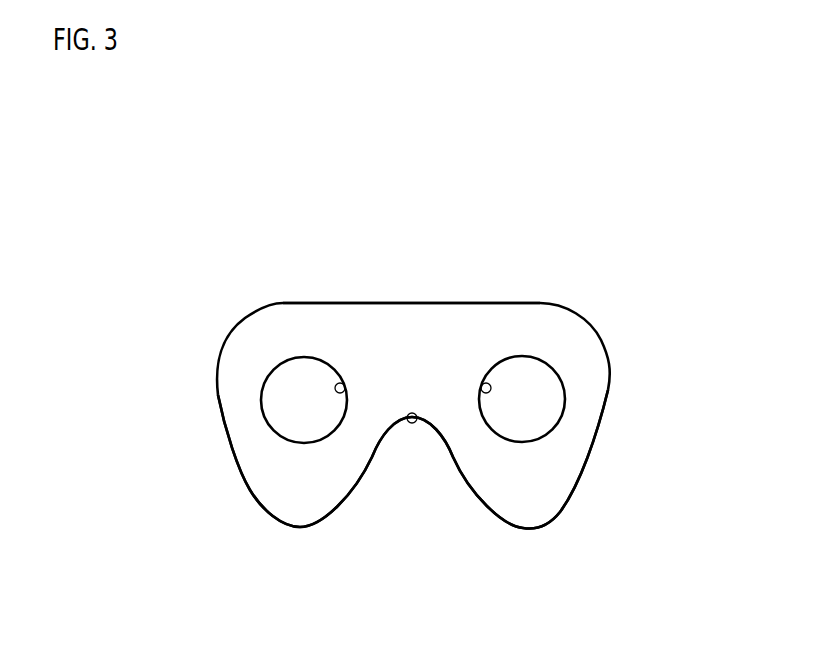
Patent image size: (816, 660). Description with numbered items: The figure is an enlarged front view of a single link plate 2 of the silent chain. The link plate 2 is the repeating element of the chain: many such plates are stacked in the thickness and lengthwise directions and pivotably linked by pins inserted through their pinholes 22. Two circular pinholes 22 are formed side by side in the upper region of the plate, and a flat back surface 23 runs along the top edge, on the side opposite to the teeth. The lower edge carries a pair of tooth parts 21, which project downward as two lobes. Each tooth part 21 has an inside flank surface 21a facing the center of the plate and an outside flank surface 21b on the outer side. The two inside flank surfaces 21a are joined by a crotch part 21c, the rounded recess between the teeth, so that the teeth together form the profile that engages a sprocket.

The link plate 2 is at (316, 262).
The tooth part 21 is at (518, 517).
The inside flank surface 21a is at (453, 457).
The outside flank surface 21b is at (227, 433).
The crotch part 21c is at (412, 413).
The pinhole 22 is at (481, 392).
The back surface 23 is at (489, 302).